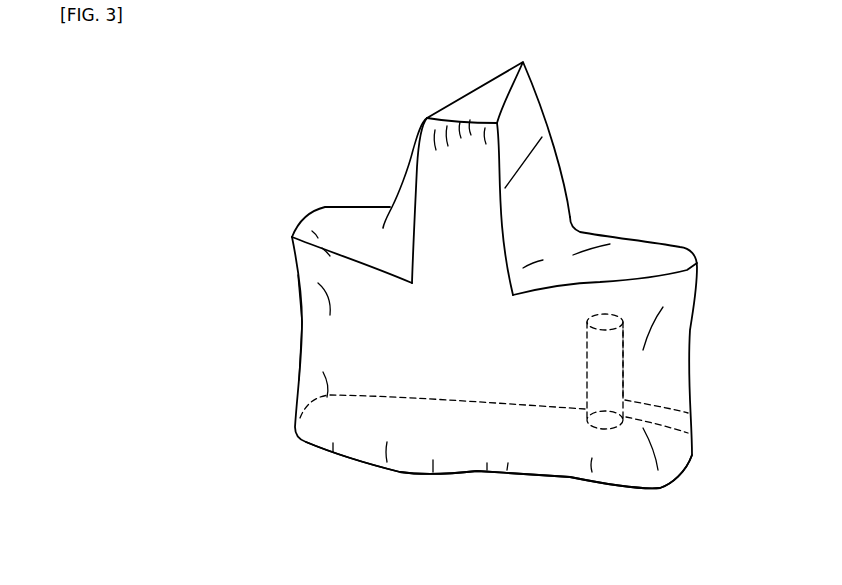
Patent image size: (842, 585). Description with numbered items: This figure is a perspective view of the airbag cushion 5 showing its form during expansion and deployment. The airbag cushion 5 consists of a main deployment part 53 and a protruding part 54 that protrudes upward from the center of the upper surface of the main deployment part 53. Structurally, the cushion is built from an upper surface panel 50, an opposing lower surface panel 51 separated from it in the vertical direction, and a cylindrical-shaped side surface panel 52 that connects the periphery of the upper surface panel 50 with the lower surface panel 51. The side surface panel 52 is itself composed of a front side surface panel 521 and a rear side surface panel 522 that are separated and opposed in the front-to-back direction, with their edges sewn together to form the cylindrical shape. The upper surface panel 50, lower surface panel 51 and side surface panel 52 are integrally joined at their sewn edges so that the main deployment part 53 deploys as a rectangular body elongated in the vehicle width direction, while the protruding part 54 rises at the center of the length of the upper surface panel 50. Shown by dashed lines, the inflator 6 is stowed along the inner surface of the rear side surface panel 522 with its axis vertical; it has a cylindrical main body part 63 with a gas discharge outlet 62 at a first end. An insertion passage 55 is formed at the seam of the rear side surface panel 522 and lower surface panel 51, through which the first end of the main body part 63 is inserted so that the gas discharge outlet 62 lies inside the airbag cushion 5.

The airbag cushion 5 is at (313, 205).
The upper surface panel 50 is at (555, 172).
The lower surface panel 51 is at (628, 470).
The side surface panel 52 is at (185, 302).
The front side surface panel 521 is at (320, 362).
The rear side surface panel 522 is at (330, 313).
The main deployment part 53 is at (470, 490).
The protruding part 54 is at (432, 158).
The insertion passage 55 is at (690, 413).
The inflator 6 is at (623, 373).
The gas discharge outlet 62 is at (620, 312).
The main body part 63 is at (623, 342).